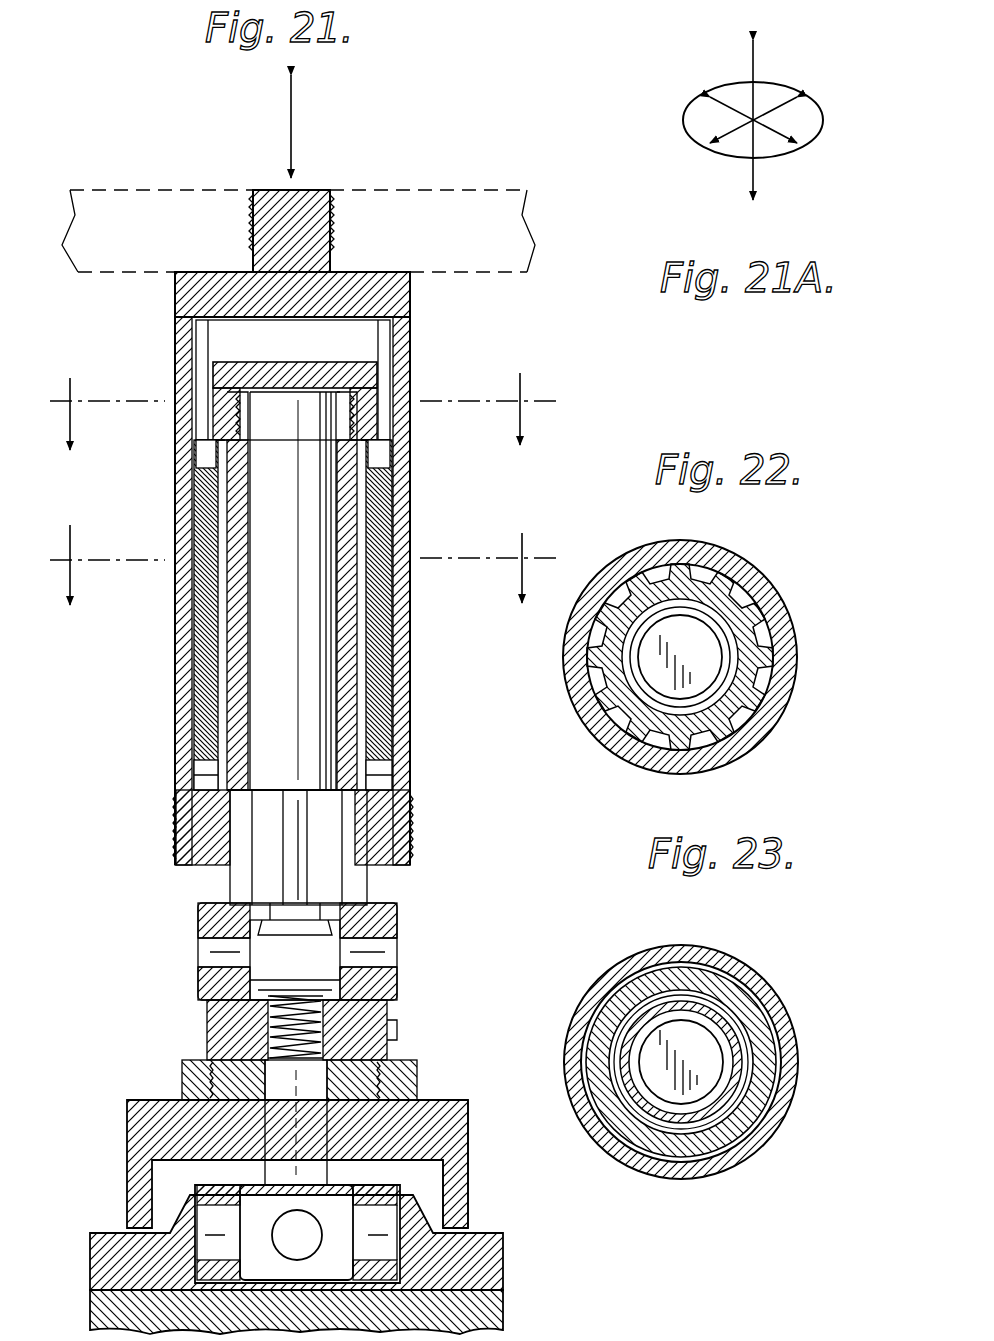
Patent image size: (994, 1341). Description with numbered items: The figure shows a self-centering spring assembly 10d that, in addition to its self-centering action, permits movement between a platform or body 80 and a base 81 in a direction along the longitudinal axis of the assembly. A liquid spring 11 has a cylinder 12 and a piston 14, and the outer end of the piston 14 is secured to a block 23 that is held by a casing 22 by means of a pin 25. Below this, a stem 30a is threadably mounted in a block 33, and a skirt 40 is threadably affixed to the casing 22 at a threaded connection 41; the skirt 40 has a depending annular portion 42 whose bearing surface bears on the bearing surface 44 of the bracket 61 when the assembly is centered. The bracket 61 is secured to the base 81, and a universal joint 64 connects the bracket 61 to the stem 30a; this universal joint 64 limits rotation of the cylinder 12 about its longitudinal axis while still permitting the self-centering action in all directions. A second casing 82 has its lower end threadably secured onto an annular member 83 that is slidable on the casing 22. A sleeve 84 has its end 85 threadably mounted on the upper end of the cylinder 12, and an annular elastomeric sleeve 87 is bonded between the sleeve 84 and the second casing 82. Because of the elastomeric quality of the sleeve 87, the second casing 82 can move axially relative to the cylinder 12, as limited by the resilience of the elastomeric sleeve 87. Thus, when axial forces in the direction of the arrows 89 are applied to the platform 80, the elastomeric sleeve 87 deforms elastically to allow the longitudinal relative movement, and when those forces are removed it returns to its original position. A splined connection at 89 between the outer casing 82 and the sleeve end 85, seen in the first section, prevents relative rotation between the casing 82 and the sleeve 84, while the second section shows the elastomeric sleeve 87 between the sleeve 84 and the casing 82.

In FIG. 21, the self-centering spring assembly 10d is at (478, 362).
In FIG. 21, the liquid spring 11 is at (265, 632).
In FIG. 21, the cylinder 12 is at (265, 597).
In FIG. 23, the cylinder 12 is at (655, 1040).
In FIG. 21, the piston 14 is at (283, 882).
In FIG. 21, the casing 22 is at (225, 762).
In FIG. 21, the block 23 is at (283, 945).
In FIG. 21, the pin 25 is at (390, 948).
In FIG. 21, the stem 30a is at (280, 1145).
In FIG. 21, the block 33 is at (385, 1030).
In FIG. 21, the skirt 40 is at (450, 1100).
In FIG. 21, the threaded connection 41 is at (190, 1085).
In FIG. 21, the depending annular portion 42 is at (470, 1130).
In FIG. 21, the bearing surface 44 is at (452, 1228).
In FIG. 21, the bracket 61 is at (495, 1260).
In FIG. 21, the universal joint 64 is at (278, 1184).
In FIG. 21, the platform 80 is at (470, 190).
In FIG. 21, the base 81 is at (500, 1308).
In FIG. 21, the second casing 82 is at (410, 620).
In FIG. 22, the second casing 82 is at (798, 620).
In FIG. 23, the second casing 82 is at (772, 1138).
In FIG. 21, the annular member 83 is at (410, 790).
In FIG. 21, the sleeve 84 is at (357, 500).
In FIG. 23, the sleeve 84 is at (740, 1073).
In FIG. 21, the sleeve end 85 is at (240, 362).
In FIG. 22, the sleeve end 85 is at (658, 560).
In FIG. 21, the elastomeric sleeve 87 is at (194, 500).
In FIG. 23, the elastomeric sleeve 87 is at (738, 998).
In FIG. 21, the arrows / splined connection 89 is at (286, 112).
In FIG. 22, the arrows / splined connection 89 is at (775, 712).